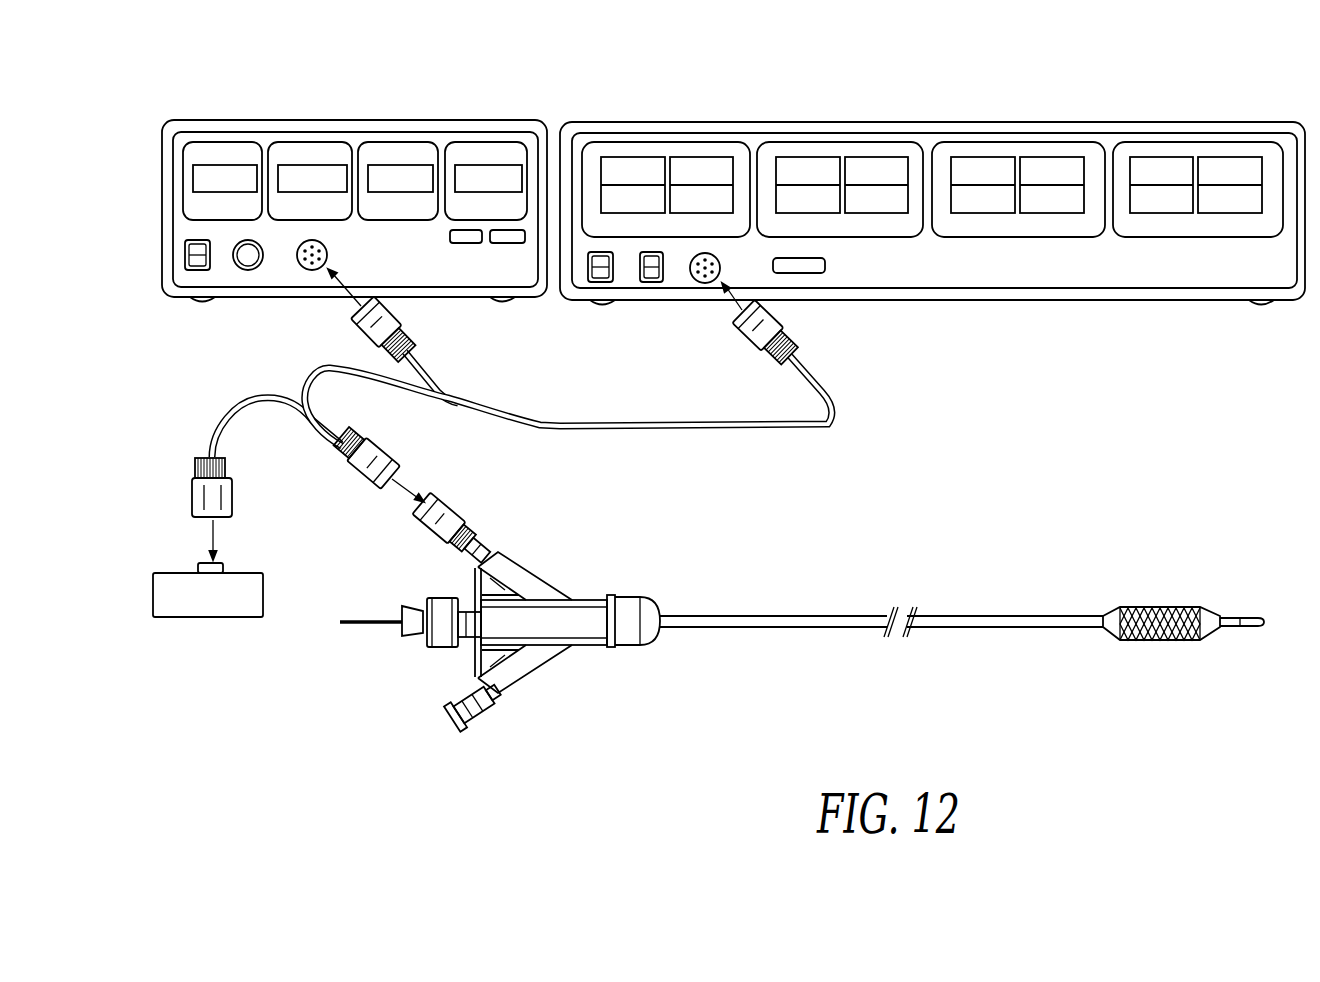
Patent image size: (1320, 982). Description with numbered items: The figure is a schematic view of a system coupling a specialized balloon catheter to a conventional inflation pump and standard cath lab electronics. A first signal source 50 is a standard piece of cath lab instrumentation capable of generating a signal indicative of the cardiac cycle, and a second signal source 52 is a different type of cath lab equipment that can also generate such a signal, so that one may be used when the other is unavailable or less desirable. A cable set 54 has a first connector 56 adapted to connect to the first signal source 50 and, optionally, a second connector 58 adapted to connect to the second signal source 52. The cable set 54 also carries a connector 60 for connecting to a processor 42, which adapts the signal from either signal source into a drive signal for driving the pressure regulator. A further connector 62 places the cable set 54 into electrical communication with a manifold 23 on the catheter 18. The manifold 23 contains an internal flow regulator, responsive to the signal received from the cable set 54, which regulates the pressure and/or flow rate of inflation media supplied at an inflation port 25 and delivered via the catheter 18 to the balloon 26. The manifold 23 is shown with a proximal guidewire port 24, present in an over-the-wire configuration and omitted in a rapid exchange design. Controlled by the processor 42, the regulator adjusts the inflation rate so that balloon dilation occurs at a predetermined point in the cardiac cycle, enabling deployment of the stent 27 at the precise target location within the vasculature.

The first signal source 50 is at (349, 90).
The second signal source 52 is at (973, 90).
The cable set 54 is at (641, 443).
The first connector 56 is at (360, 320).
The second connector 58 is at (787, 323).
The connector 60 is at (196, 502).
The connector 62 is at (397, 463).
The processor 42 is at (165, 590).
The catheter 18 is at (851, 573).
The manifold 23 is at (584, 647).
The proximal guidewire port 24 is at (400, 648).
The inflation port 25 is at (456, 722).
The balloon 26 is at (1215, 612).
The stent 27 is at (1170, 638).